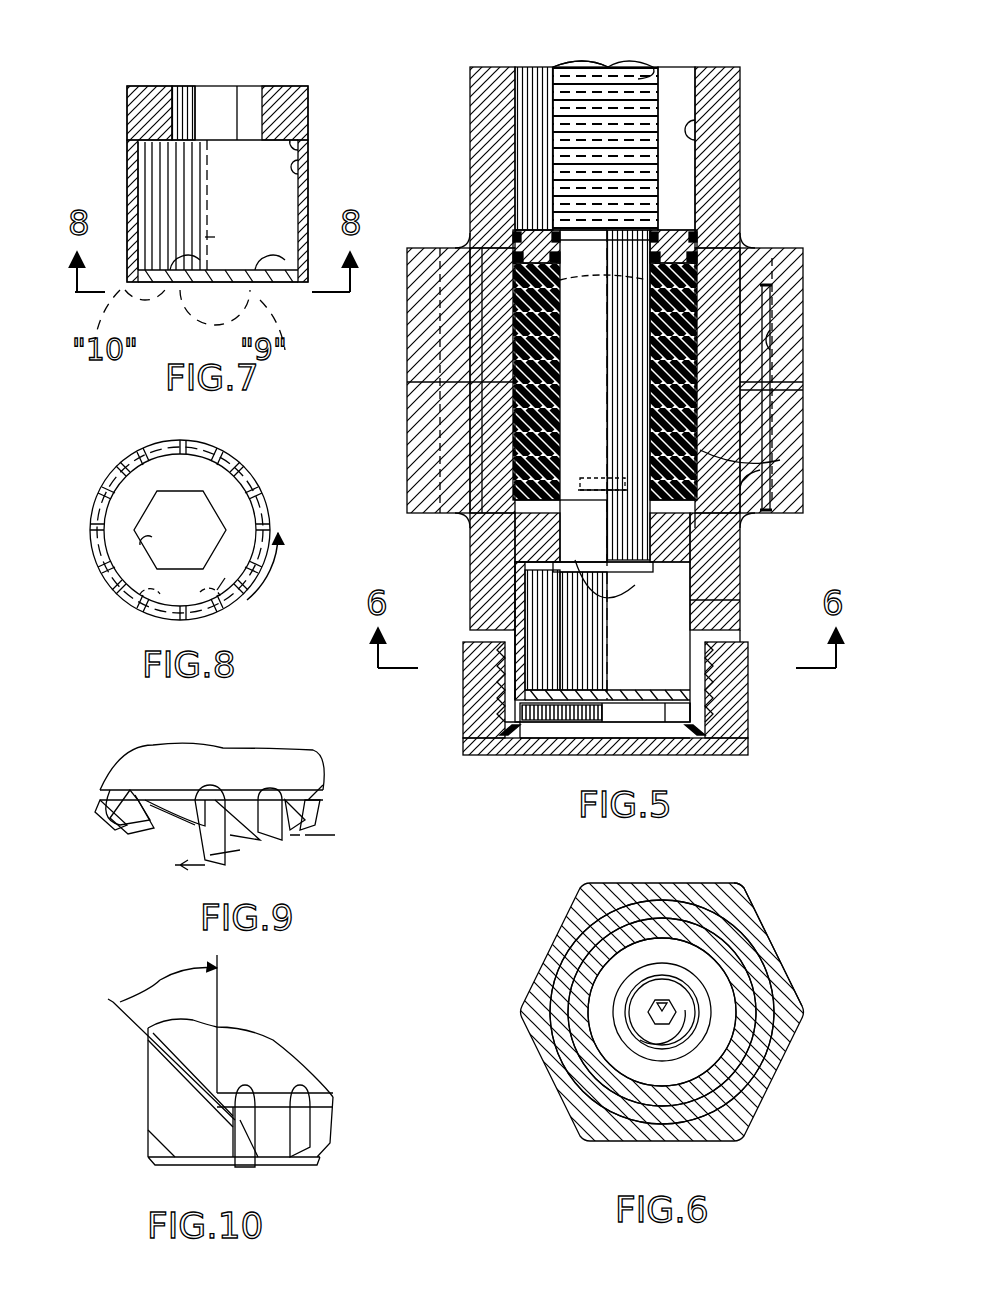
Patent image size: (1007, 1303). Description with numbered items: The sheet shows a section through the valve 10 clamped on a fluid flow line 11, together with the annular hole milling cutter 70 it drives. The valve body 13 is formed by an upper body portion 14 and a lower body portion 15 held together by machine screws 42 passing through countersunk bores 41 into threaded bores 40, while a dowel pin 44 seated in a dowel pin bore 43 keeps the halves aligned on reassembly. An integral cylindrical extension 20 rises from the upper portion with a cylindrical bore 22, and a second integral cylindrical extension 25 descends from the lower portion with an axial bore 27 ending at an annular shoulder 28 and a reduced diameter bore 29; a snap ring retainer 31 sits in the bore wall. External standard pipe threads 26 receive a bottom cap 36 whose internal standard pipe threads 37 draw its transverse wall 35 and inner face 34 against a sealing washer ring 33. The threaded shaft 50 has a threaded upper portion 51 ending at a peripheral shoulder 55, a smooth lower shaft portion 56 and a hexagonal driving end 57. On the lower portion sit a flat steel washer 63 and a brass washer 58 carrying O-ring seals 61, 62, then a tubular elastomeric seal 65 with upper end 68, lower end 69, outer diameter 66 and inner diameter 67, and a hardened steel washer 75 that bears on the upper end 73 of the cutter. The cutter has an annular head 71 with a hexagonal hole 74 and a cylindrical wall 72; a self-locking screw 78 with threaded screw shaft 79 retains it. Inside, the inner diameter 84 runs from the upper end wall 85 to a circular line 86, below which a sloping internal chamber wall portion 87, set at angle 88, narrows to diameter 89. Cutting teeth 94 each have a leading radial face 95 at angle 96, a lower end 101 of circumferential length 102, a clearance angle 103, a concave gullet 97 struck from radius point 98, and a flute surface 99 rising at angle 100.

In FIG. 5, the valve 10 is at (405, 505).
In FIG. 5, the fluid flow line 11 is at (800, 385).
In FIG. 5, the valve body 13 is at (794, 245).
In FIG. 5, the upper body portion 14 is at (430, 318).
In FIG. 5, the lower body portion 15 is at (420, 422).
In FIG. 5, the integral cylindrical extension 20 is at (468, 102).
In FIG. 5, the cylindrical bore 22 is at (700, 135).
In FIG. 5, the integral cylindrical extension 25 is at (728, 565).
In FIG. 6, the integral cylindrical extension 25 is at (585, 925).
In FIG. 5, the external standard pipe threads 26 is at (690, 722).
In FIG. 6, the external standard pipe threads 26 is at (725, 938).
In FIG. 5, the axial bore 27 is at (690, 600).
In FIG. 5, the annular shoulder 28 is at (505, 728).
In FIG. 5, the reduced diameter bore 29 is at (672, 728).
In FIG. 5, the snap ring retainer 31 is at (640, 722).
In FIG. 5, the sealing washer ring 33 is at (722, 742).
In FIG. 5, the inner face 34 is at (605, 728).
In FIG. 5, the transverse wall 35 is at (562, 750).
In FIG. 5, the bottom cap 36 is at (752, 698).
In FIG. 6, the bottom cap 36 is at (565, 1112).
In FIG. 5, the internal standard pipe threads 37 is at (735, 652).
In FIG. 6, the internal standard pipe threads 37 is at (762, 1062).
In FIG. 5, the threaded bores 40 is at (425, 300).
In FIG. 5, the countersunk bores 41 is at (410, 478).
In FIG. 5, the machine screw 42 is at (785, 272).
In FIG. 5, the dowel pin bore 43 is at (775, 345).
In FIG. 5, the dowel pin 44 is at (768, 330).
In FIG. 5, the threaded shaft 50 is at (640, 48).
In FIG. 5, the threaded upper portion 51 is at (578, 67).
In FIG. 5, the peripheral shoulder 55 is at (603, 260).
In FIG. 5, the lower shaft portion 56 is at (500, 430).
In FIG. 5, the driving end 57 is at (612, 592).
In FIG. 5, the brass washer 58 is at (690, 228).
In FIG. 5, the O-ring seal 61 is at (513, 262).
In FIG. 5, the O-ring seal 62 is at (648, 256).
In FIG. 5, the flat steel washer 63 is at (550, 218).
In FIG. 5, the tubular elastomeric seal 65 is at (565, 308).
In FIG. 5, the outer diameter 66 is at (760, 460).
In FIG. 5, the inner diameter 67 is at (650, 390).
In FIG. 5, the upper end 68 is at (548, 260).
In FIG. 5, the lower end 69 is at (700, 518).
In FIG. 5, the annular hole milling cutter 70 is at (512, 525).
In FIG. 7, the annular hole milling cutter 70 is at (126, 112).
In FIG. 8, the annular hole milling cutter 70 is at (90, 510).
In FIG. 6, the annular hole milling cutter 70 is at (570, 1052).
In FIG. 5, the annular head 71 is at (525, 565).
In FIG. 7, the annular head 71 is at (132, 97).
In FIG. 5, the cylindrical wall 72 is at (505, 630).
In FIG. 7, the cylindrical wall 72 is at (128, 185).
In FIG. 6, the cylindrical wall 72 is at (596, 965).
In FIG. 7, the upper end 73 is at (145, 87).
In FIG. 5, the hexagonal hole 74 is at (575, 567).
In FIG. 7, the hexagonal hole 74 is at (260, 108).
In FIG. 8, the hexagonal hole 74 is at (140, 545).
In FIG. 5, the hardened steel washer 75 is at (560, 505).
In FIG. 5, the self-locking screw 78 is at (625, 590).
In FIG. 6, the self-locking screw 78 is at (655, 1062).
In FIG. 5, the threaded screw shaft 79 is at (625, 572).
In FIG. 5, the inner diameter 84 is at (510, 685).
In FIG. 7, the inner diameter 84 is at (300, 175).
In FIG. 8, the inner diameter 84 is at (225, 598).
In FIG. 10, the inner diameter 84 is at (218, 1050).
In FIG. 7, the upper end wall 85 is at (300, 146).
In FIG. 6, the upper end wall 85 is at (692, 955).
In FIG. 7, the circular line 86 is at (272, 270).
In FIG. 9, the circular line 86 is at (300, 775).
In FIG. 10, the circular line 86 is at (280, 1095).
In FIG. 7, the sloping internal chamber wall portion 87 is at (225, 273).
In FIG. 9, the sloping internal chamber wall portion 87 is at (290, 800).
In FIG. 10, the sloping internal chamber wall portion 87 is at (270, 1095).
In FIG. 10, the angle 88 is at (160, 978).
In FIG. 7, the diameter 89 is at (290, 272).
In FIG. 8, the diameter 89 is at (135, 605).
In FIG. 10, the diameter 89 is at (240, 1140).
In FIG. 5, the cutting teeth 94 is at (637, 690).
In FIG. 7, the cutting teeth 94 is at (245, 282).
In FIG. 8, the cutting teeth 94 is at (153, 470).
In FIG. 9, the cutting teeth 94 is at (180, 810).
In FIG. 9, the leading radial face 95 is at (268, 800).
In FIG. 9, the angle 96 is at (200, 870).
In FIG. 9, the concave gullet 97 is at (145, 790).
In FIG. 9, the radius point 98 is at (208, 800).
In FIG. 9, the flute surface 99 is at (105, 790).
In FIG. 9, the angle 100 is at (240, 855).
In FIG. 9, the lower end 101 is at (118, 832).
In FIG. 9, the circumferential length 102 is at (308, 836).
In FIG. 9, the clearance angle 103 is at (150, 832).